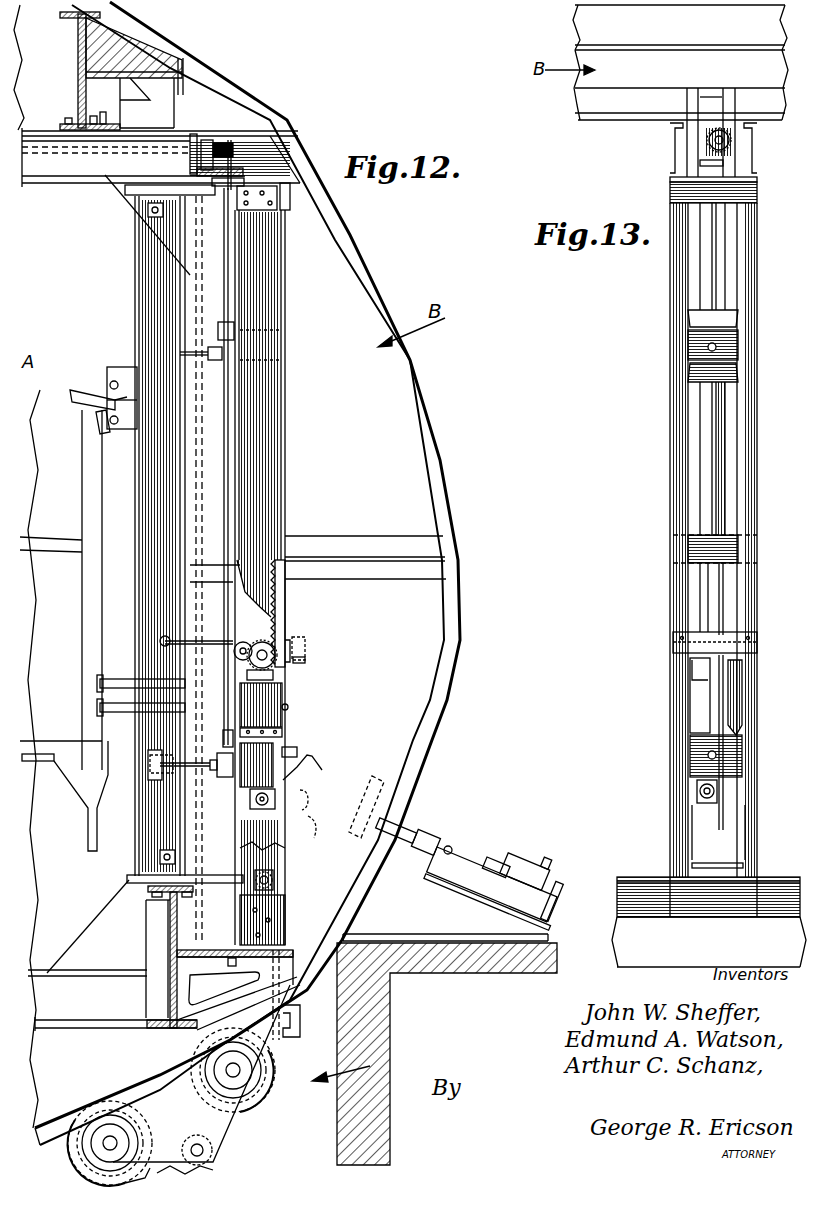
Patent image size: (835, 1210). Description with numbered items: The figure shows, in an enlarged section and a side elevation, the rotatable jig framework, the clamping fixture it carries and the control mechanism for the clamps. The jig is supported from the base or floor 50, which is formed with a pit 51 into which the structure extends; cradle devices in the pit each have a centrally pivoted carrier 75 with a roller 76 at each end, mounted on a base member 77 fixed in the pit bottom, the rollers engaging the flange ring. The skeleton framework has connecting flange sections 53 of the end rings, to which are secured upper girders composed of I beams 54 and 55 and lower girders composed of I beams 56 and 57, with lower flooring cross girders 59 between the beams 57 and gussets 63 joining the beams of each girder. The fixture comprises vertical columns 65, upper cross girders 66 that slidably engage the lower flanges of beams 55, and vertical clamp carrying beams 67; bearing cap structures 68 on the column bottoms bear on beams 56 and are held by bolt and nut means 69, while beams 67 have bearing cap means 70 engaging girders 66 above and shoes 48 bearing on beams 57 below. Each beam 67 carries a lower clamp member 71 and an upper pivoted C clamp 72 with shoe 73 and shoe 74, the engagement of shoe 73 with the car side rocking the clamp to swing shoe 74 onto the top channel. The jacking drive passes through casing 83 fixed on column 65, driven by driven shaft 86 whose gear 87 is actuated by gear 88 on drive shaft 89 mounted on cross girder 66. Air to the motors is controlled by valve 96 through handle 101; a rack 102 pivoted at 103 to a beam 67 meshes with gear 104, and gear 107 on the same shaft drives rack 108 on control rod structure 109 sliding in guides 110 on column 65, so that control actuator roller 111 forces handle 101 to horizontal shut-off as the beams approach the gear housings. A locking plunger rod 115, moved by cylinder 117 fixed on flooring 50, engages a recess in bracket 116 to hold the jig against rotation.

In FIG. 12, the shoe 48 is at (148, 880).
In FIG. 12, the base or floor 50 is at (460, 960).
In FIG. 12, the pit 51 is at (366, 1076).
In FIG. 12, the connecting flange sections 53 is at (378, 297).
In FIG. 12, the upper girder I beam 54 is at (182, 62).
In FIG. 13, the upper girder I beam 54 is at (582, 80).
In FIG. 12, the upper girder I beam 55 is at (78, 30).
In FIG. 13, the upper girder I beam 55 is at (585, 25).
In FIG. 12, the lower girder I beam 56 is at (200, 948).
In FIG. 13, the lower girder I beam 56 is at (622, 932).
In FIG. 12, the lower girder I beam 57 is at (170, 936).
In FIG. 13, the lower girder I beam 57 is at (622, 895).
In FIG. 12, the lower flooring cross girder 59 is at (54, 991).
In FIG. 12, the gusset 63 is at (170, 993).
In FIG. 12, the vertical column 65 is at (285, 420).
In FIG. 13, the vertical column 65 is at (678, 385).
In FIG. 12, the upper cross girder 66 is at (278, 150).
In FIG. 12, the vertical clamp carrying beam 67 is at (142, 497).
In FIG. 12, the bearing cap structure 68 is at (272, 200).
In FIG. 12, the bolt and nut means 69 is at (233, 966).
In FIG. 12, the bearing cap means 70 is at (133, 193).
In FIG. 12, the lower clamp member 71 is at (114, 684).
In FIG. 12, the upper pivoted C clamp 72 is at (118, 367).
In FIG. 12, the shoe 73 is at (97, 422).
In FIG. 12, the shoe 74 is at (97, 388).
In FIG. 12, the centrally pivoted carrier 75 is at (212, 1126).
In FIG. 12, the roller 76 is at (255, 1092).
In FIG. 12, the base member 77 is at (213, 1162).
In FIG. 12, the casing 83 is at (224, 366).
In FIG. 13, the casing 83 is at (690, 340).
In FIG. 12, the driven shaft 86 is at (272, 487).
In FIG. 13, the driven shaft 86 is at (722, 282).
In FIG. 12, the gear 87 is at (231, 157).
In FIG. 13, the gear 87 is at (700, 153).
In FIG. 12, the gear 88 is at (212, 142).
In FIG. 13, the gear 88 is at (712, 130).
In FIG. 12, the drive shaft 89 is at (194, 134).
In FIG. 13, the drive shaft 89 is at (730, 137).
In FIG. 12, the valve 96 is at (256, 806).
In FIG. 13, the valve 96 is at (697, 791).
In FIG. 12, the handle 101 is at (322, 760).
In FIG. 13, the handle 101 is at (724, 772).
In FIG. 12, the rack 102 is at (262, 641).
In FIG. 12, the pivot 103 is at (160, 640).
In FIG. 12, the gear 104 is at (247, 660).
In FIG. 12, the gear 107 is at (246, 657).
In FIG. 12, the rack 108 is at (287, 600).
In FIG. 13, the rack 108 is at (722, 583).
In FIG. 12, the control rod structure 109 is at (292, 690).
In FIG. 13, the control rod structure 109 is at (712, 687).
In FIG. 12, the guide 110 is at (303, 658).
In FIG. 13, the guide 110 is at (748, 645).
In FIG. 12, the control actuator roller 111 is at (289, 708).
In FIG. 13, the control actuator roller 111 is at (722, 705).
In FIG. 12, the plunger rod 115 is at (400, 822).
In FIG. 12, the bracket 116 is at (388, 788).
In FIG. 12, the cylinder 117 is at (528, 878).